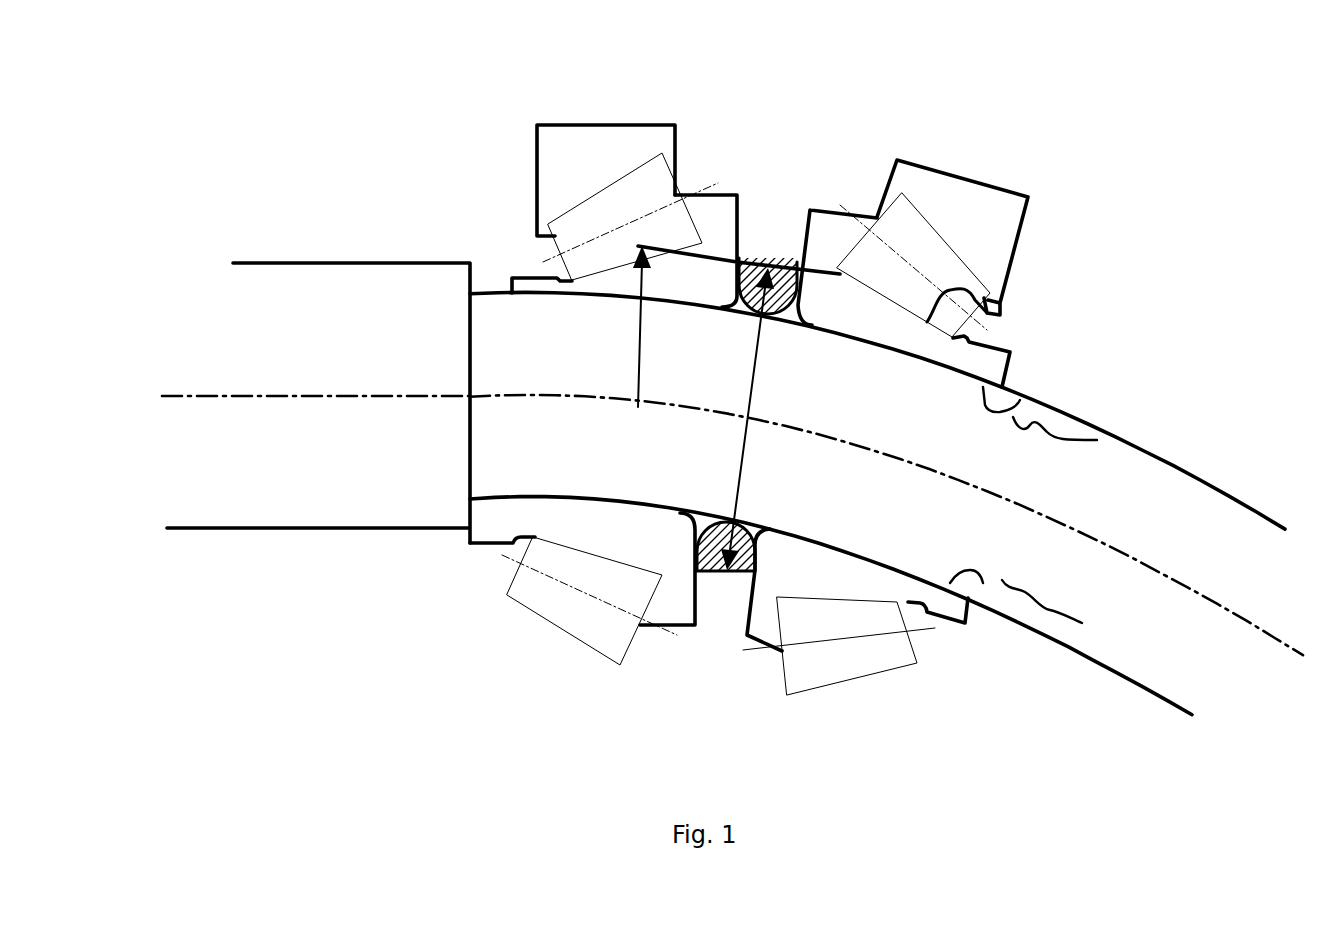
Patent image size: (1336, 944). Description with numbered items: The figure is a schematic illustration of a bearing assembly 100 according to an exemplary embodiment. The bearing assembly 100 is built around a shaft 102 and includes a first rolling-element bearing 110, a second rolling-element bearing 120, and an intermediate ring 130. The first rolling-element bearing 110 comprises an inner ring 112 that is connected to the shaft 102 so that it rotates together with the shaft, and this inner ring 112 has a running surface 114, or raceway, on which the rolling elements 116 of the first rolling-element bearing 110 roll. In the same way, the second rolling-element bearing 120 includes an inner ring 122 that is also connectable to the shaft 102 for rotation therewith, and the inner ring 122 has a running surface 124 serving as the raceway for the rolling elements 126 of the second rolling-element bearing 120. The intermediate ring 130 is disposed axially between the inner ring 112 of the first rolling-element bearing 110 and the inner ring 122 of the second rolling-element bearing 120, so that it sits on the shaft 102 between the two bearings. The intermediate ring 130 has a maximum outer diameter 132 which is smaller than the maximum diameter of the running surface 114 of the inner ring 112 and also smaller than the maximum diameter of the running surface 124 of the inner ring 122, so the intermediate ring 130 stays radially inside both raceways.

The bearing assembly 100 is at (766, 100).
The shaft 102 is at (1152, 458).
The first rolling-element bearing 110 is at (537, 143).
The inner ring 112 is at (737, 195).
The running surface 114 is at (607, 273).
The rolling elements 116 is at (610, 210).
The second rolling-element bearing 120 is at (1030, 203).
The inner ring 122 is at (1010, 353).
The running surface 124 is at (1000, 313).
The rolling elements 126 is at (938, 247).
The intermediate ring 130 is at (783, 263).
The maximum outer diameter 132 is at (748, 420).